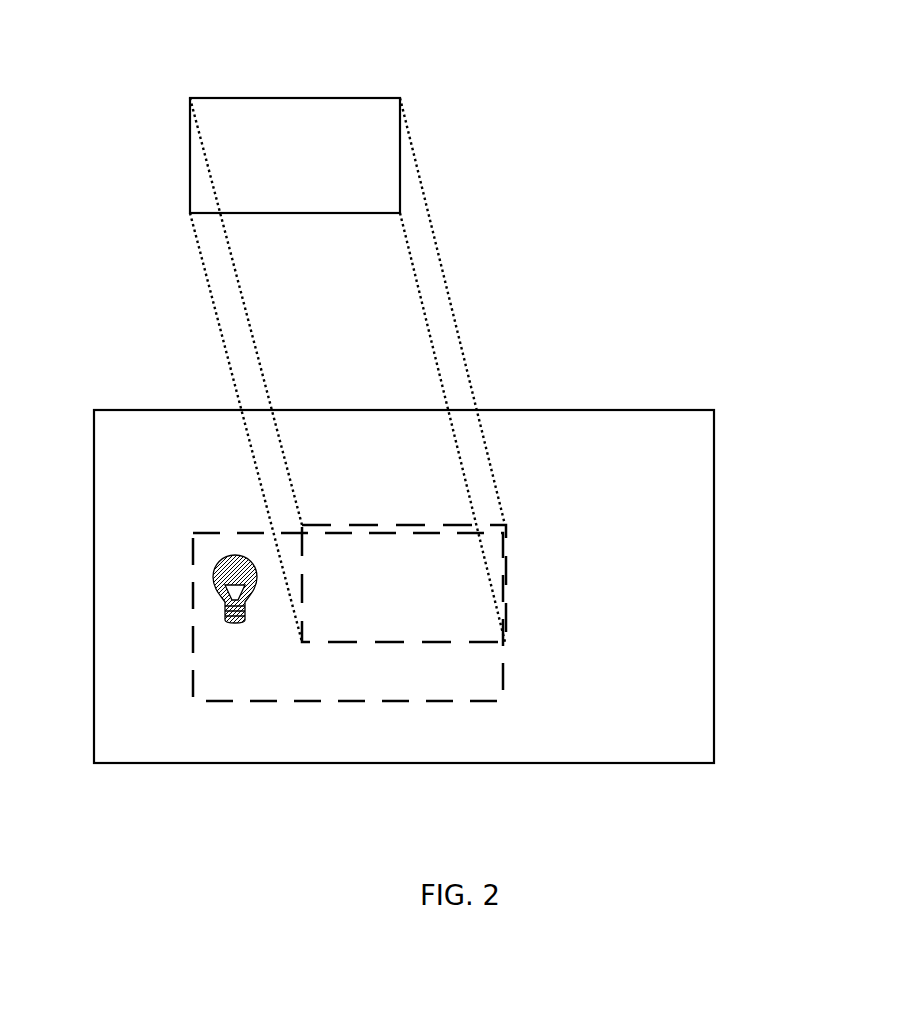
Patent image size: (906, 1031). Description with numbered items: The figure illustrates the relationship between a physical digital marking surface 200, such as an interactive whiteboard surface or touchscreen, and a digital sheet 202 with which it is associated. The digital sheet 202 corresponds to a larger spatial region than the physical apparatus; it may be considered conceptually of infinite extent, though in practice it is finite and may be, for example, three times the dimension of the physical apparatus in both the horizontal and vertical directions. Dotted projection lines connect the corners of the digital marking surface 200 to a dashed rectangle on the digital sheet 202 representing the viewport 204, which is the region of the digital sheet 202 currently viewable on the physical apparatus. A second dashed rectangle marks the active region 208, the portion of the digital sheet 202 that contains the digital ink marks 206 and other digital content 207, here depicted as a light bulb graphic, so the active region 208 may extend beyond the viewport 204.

The digital marking surface 200 is at (300, 98).
The digital sheet 202 is at (622, 390).
The viewport 204 is at (500, 578).
The digital ink marks 206 is at (253, 694).
The other digital content 207 is at (213, 580).
The active region 208 is at (495, 696).